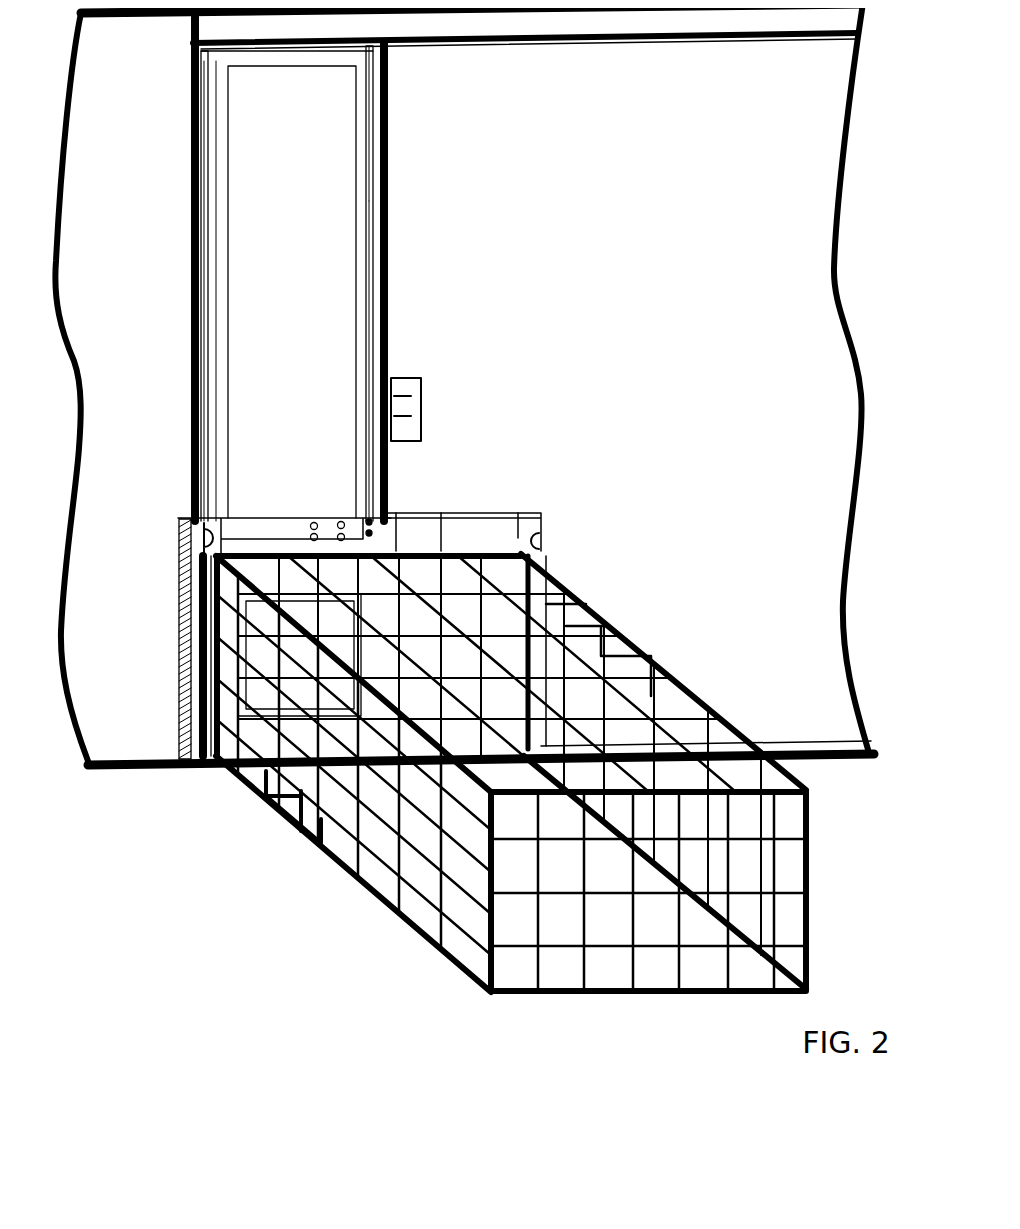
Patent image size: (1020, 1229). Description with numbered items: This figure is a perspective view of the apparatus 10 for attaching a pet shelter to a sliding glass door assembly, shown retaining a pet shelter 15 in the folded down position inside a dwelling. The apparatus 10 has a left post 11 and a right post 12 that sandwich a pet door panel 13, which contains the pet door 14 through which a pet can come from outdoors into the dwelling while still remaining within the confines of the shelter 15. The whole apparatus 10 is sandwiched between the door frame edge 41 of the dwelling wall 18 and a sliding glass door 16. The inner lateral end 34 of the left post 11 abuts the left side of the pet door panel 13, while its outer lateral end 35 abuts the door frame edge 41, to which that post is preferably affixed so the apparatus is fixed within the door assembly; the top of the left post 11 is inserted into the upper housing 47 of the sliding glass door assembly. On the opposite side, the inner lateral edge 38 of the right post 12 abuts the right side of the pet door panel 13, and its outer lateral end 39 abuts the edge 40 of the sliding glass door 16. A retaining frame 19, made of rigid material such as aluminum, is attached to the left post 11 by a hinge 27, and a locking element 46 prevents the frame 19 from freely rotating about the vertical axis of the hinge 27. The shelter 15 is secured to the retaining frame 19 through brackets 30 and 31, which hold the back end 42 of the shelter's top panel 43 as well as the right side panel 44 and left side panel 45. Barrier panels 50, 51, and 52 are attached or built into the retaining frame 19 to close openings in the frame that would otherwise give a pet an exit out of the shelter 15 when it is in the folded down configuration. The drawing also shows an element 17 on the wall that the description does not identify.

The apparatus 10 is at (518, 504).
The left post 11 is at (197, 60).
The right post 12 is at (380, 56).
The pet door panel 13 is at (245, 255).
The pet door 14 is at (250, 575).
The pet shelter 15 is at (700, 660).
The sliding glass door 16 is at (790, 508).
The light switch 17 is at (420, 383).
The dwelling wall 18 is at (112, 722).
The retaining frame 19 is at (537, 520).
The hinge 27 is at (177, 627).
The bracket 30 is at (547, 560).
The bracket 31 is at (197, 578).
The inner lateral end 34 is at (210, 177).
The outer lateral end 35 is at (190, 213).
The inner lateral edge 38 is at (367, 173).
The outer lateral end 39 is at (387, 207).
The edge of the sliding glass door 40 is at (385, 277).
The door frame edge 41 is at (193, 347).
The back end 42 is at (343, 533).
The top panel 43 is at (737, 722).
The right side panel 44 is at (805, 962).
The left side panel 45 is at (352, 890).
The locking element 46 is at (350, 596).
The upper housing 47 is at (537, 20).
The panel 50 is at (453, 523).
The panel 51 is at (417, 528).
The panel 52 is at (390, 523).